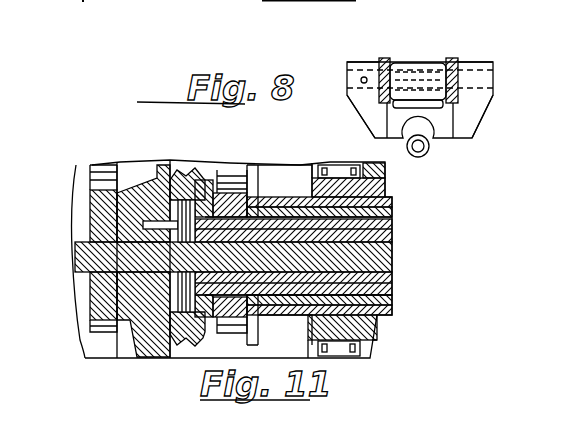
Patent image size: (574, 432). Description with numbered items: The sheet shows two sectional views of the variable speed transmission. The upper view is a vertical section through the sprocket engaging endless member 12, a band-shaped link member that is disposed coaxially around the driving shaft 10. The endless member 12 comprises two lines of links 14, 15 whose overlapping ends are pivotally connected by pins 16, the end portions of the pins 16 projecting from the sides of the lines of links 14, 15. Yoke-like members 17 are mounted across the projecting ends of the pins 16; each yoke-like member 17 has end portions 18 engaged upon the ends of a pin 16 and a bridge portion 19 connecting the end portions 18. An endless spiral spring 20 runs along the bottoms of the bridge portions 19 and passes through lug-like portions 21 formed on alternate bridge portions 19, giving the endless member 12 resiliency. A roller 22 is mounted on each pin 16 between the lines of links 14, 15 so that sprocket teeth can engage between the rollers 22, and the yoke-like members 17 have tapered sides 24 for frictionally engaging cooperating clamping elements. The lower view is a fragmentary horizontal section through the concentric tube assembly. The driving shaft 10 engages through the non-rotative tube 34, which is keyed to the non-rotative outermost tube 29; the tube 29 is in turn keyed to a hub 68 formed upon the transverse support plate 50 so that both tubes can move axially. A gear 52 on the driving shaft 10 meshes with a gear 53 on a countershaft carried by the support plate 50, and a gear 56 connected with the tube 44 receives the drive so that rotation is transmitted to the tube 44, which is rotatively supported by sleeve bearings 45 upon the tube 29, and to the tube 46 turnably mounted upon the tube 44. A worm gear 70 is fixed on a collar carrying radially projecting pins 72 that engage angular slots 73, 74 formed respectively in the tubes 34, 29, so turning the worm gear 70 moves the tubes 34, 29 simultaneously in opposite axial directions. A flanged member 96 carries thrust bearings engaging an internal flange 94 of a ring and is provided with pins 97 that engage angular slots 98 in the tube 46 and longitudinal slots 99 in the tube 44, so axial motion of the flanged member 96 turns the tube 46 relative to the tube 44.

In FIG. 11, the driving shaft 10 is at (393, 272).
In FIG. 8, the sprocket engaging endless member 12 is at (333, 97).
In FIG. 11, the sprocket engaging endless member 12 is at (140, 173).
In FIG. 8, the line of links 14 is at (388, 57).
In FIG. 8, the line of links 15 is at (455, 57).
In FIG. 8, the pins 16 is at (499, 82).
In FIG. 8, the yoke-like members 17 is at (355, 126).
In FIG. 8, the end portions 18 is at (347, 63).
In FIG. 8, the bridge portion 19 is at (468, 138).
In FIG. 8, the endless spiral spring 20 is at (425, 155).
In FIG. 8, the lug-like portions 21 is at (426, 152).
In FIG. 8, the roller 22 is at (425, 63).
In FIG. 8, the tapered sides 24 is at (353, 108).
In FIG. 11, the tube 29 is at (394, 235).
In FIG. 11, the tube 34 is at (392, 262).
In FIG. 11, the tube 44 is at (393, 224).
In FIG. 11, the sleeve bearings 45 is at (259, 200).
In FIG. 11, the tube 46 is at (395, 206).
In FIG. 11, the transverse support plate 50 is at (160, 167).
In FIG. 11, the gear 52 is at (90, 318).
In FIG. 11, the gear 53 is at (95, 170).
In FIG. 11, the gear 56 is at (235, 192).
In FIG. 11, the hub 68 is at (90, 300).
In FIG. 11, the worm gear 70 is at (190, 180).
In FIG. 11, the radially projecting pins 72 is at (196, 186).
In FIG. 11, the angular slot 73 is at (165, 258).
In FIG. 11, the angular slot 74 is at (218, 248).
In FIG. 11, the internal flange 94 is at (340, 165).
In FIG. 11, the flanged member 96 is at (385, 186).
In FIG. 11, the pins 97 is at (365, 263).
In FIG. 11, the angular slots 98 is at (285, 181).
In FIG. 11, the longitudinal slots 99 is at (282, 327).